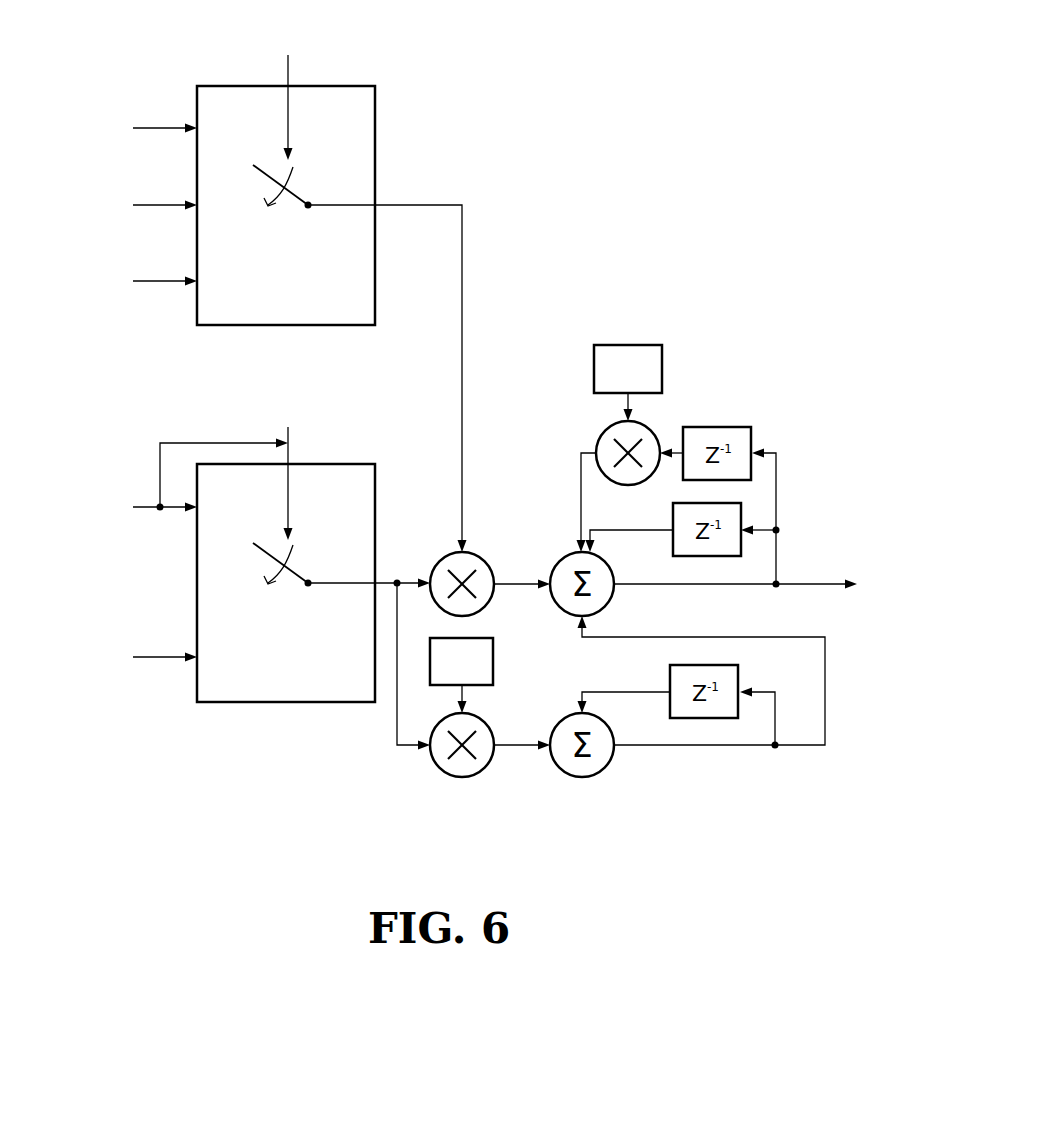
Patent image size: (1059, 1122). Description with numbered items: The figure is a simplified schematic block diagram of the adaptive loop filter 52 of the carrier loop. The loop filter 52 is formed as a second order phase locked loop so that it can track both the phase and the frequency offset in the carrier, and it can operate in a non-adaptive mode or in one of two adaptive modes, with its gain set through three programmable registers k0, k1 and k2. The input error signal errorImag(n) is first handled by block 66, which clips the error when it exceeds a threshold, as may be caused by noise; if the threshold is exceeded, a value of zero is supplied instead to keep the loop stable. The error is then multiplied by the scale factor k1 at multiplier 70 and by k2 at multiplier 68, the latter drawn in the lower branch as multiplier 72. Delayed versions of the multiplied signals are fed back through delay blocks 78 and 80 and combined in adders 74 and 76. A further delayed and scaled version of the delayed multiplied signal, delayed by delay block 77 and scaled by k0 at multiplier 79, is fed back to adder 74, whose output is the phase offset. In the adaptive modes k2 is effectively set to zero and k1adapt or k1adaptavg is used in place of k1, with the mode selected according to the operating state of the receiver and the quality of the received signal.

The loop filter 52 is at (620, 80).
The clipping block 66 is at (375, 108).
The multiplier 68 is at (375, 486).
The multiplier 70 is at (440, 560).
The multiplier 72 is at (441, 774).
The adder 74 is at (562, 560).
The adder 76 is at (562, 721).
The delay block 77 is at (730, 427).
The delay block 78 is at (722, 503).
The multiplier 79 is at (608, 436).
The delay block 80 is at (732, 665).